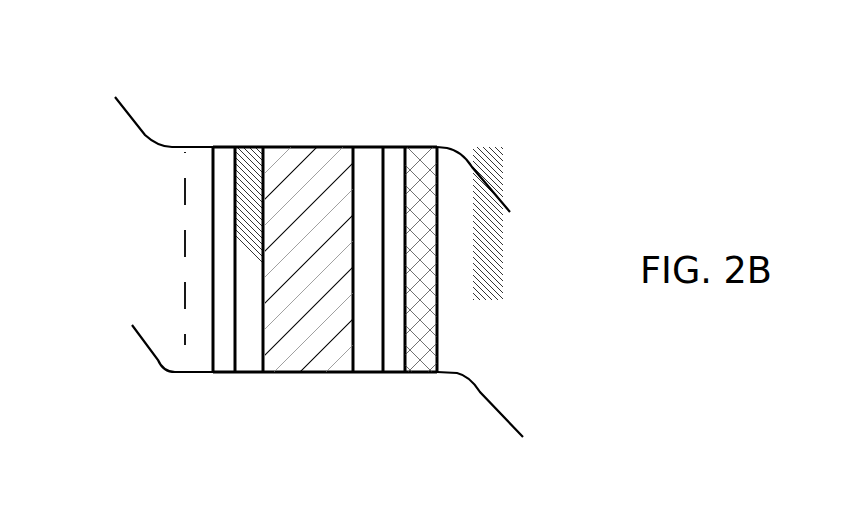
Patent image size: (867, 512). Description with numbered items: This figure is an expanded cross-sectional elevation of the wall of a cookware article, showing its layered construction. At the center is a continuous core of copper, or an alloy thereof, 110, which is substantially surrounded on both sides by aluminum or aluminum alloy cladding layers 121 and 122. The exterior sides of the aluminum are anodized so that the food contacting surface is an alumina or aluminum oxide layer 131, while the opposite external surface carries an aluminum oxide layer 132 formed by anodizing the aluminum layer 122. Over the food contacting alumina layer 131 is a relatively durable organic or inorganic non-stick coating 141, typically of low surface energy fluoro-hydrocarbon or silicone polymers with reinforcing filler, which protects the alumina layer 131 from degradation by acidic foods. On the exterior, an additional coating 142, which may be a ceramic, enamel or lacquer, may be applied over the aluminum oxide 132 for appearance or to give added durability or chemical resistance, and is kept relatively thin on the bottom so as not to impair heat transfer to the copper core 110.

The core of copper 110 is at (312, 187).
The cladding layer 121 is at (402, 140).
The cladding layer 122 is at (222, 147).
The alumina layer 131 is at (390, 363).
The aluminum oxide layer 132 is at (220, 362).
The non-stick coating 141 is at (433, 272).
The coating 142 is at (167, 257).